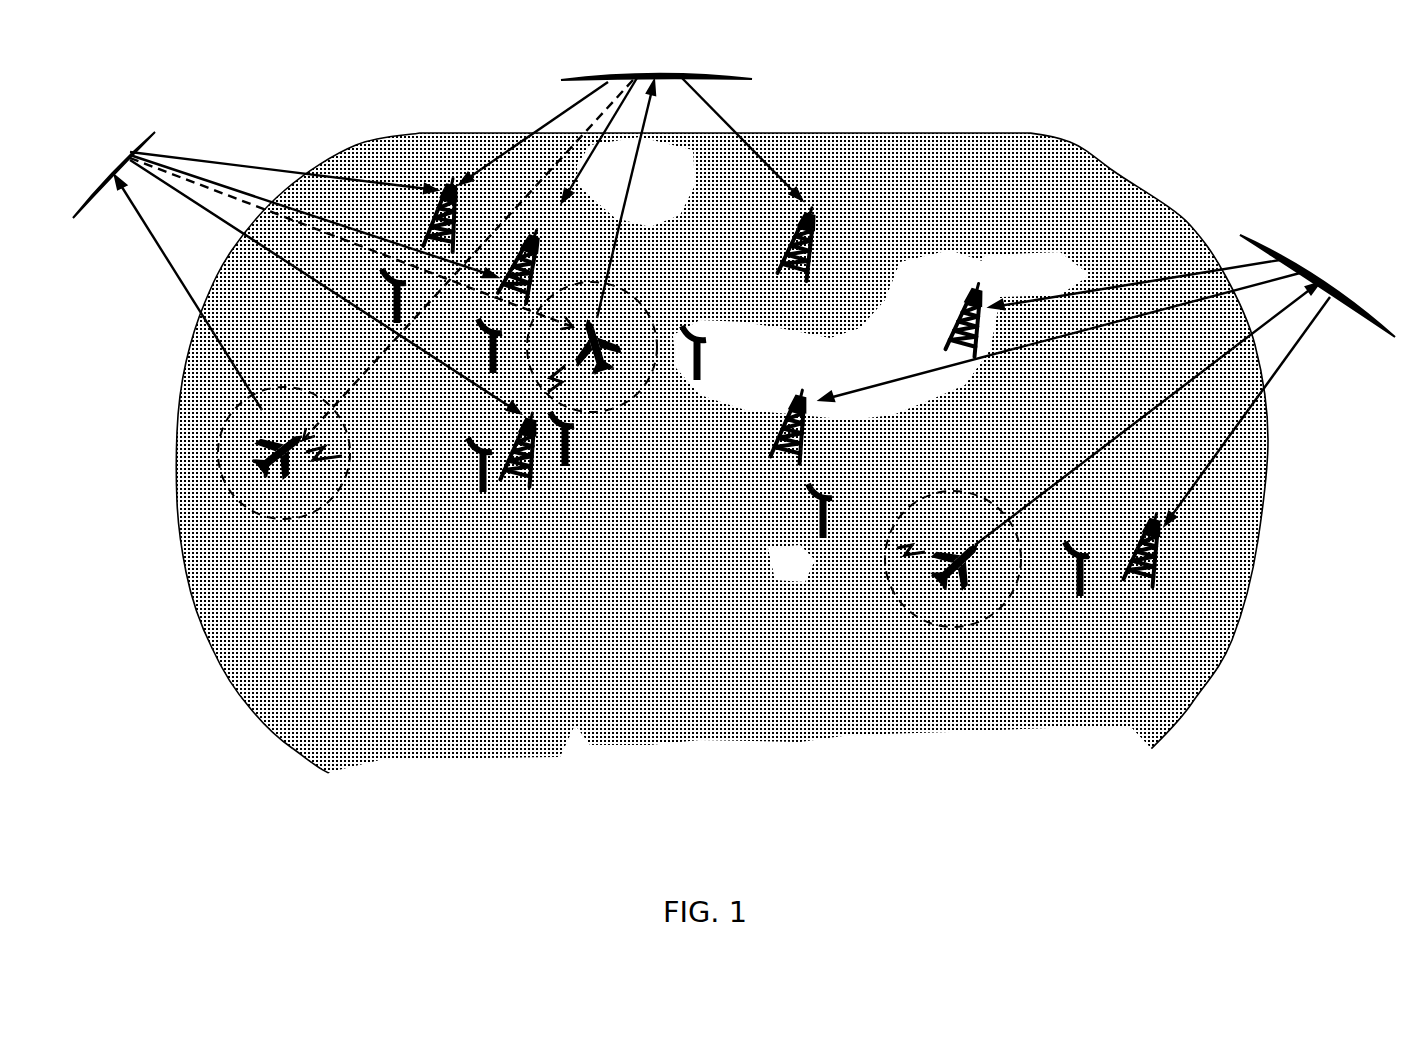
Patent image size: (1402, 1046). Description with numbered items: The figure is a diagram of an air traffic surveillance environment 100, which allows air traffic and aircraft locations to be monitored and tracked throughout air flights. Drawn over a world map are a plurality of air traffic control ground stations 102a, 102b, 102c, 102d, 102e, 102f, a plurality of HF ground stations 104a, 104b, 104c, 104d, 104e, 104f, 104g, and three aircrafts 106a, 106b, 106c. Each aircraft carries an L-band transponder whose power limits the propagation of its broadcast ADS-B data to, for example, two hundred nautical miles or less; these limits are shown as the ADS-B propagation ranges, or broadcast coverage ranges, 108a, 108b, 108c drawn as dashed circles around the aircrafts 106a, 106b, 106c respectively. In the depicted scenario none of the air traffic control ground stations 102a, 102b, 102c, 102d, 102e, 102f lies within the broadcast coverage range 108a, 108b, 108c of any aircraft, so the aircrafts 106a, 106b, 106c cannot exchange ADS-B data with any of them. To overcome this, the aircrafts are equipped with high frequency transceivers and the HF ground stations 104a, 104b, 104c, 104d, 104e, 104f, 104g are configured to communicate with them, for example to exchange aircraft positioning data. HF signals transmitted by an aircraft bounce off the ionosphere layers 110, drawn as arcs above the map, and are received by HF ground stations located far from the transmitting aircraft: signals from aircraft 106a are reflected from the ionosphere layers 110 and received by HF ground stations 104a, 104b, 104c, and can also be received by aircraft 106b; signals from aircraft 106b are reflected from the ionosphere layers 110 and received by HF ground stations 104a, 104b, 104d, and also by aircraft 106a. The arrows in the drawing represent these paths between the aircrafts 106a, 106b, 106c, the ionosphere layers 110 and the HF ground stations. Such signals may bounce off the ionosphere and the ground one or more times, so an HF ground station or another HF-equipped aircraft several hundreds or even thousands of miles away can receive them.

The air traffic surveillance environment 100 is at (1120, 55).
The air traffic control ground station 102a is at (383, 288).
The air traffic control ground station 102b is at (482, 317).
The air traffic control ground station 102c is at (473, 447).
The air traffic control ground station 102d is at (570, 447).
The air traffic control ground station 102e is at (708, 348).
The air traffic control ground station 102f is at (820, 510).
The HF ground station 104a is at (452, 183).
The HF ground station 104b is at (535, 233).
The HF ground station 104c is at (507, 490).
The HF ground station 104d is at (813, 243).
The HF ground station 104e is at (800, 423).
The HF ground station 104f is at (963, 297).
The HF ground station 104g is at (1158, 552).
The aircraft 106a is at (293, 470).
The aircraft 106b is at (598, 322).
The aircraft 106c is at (947, 547).
The ADS-B propagation range 108a is at (355, 452).
The ADS-B propagation range 108b is at (643, 387).
The ADS-B propagation range 108c is at (890, 592).
The ionosphere layers 110 is at (132, 148).